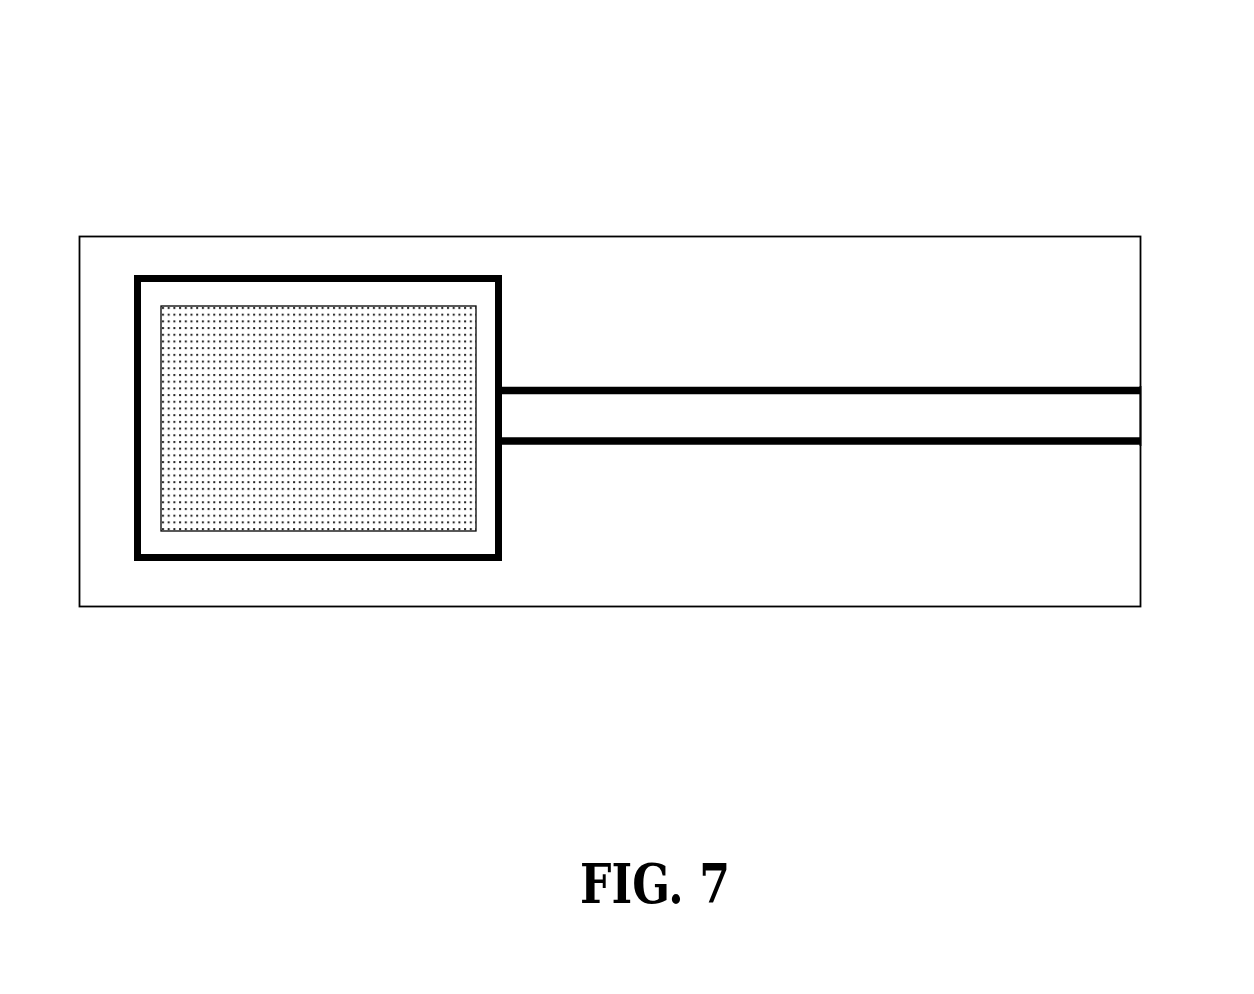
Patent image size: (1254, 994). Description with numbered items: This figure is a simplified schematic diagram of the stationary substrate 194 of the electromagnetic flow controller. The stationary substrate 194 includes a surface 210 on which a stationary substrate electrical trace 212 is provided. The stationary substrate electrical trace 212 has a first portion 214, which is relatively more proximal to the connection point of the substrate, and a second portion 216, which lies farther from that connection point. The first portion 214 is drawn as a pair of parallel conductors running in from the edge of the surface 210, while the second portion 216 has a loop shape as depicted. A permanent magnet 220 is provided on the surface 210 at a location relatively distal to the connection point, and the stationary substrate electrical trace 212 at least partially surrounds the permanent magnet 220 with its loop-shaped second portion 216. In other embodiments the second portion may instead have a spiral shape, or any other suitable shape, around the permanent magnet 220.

The stationary substrate 194 is at (1232, 78).
The surface 210 is at (836, 267).
The stationary substrate electrical trace 212 is at (1146, 389).
The first portion 214 is at (602, 388).
The second portion 216 is at (427, 277).
The permanent magnet 220 is at (312, 502).